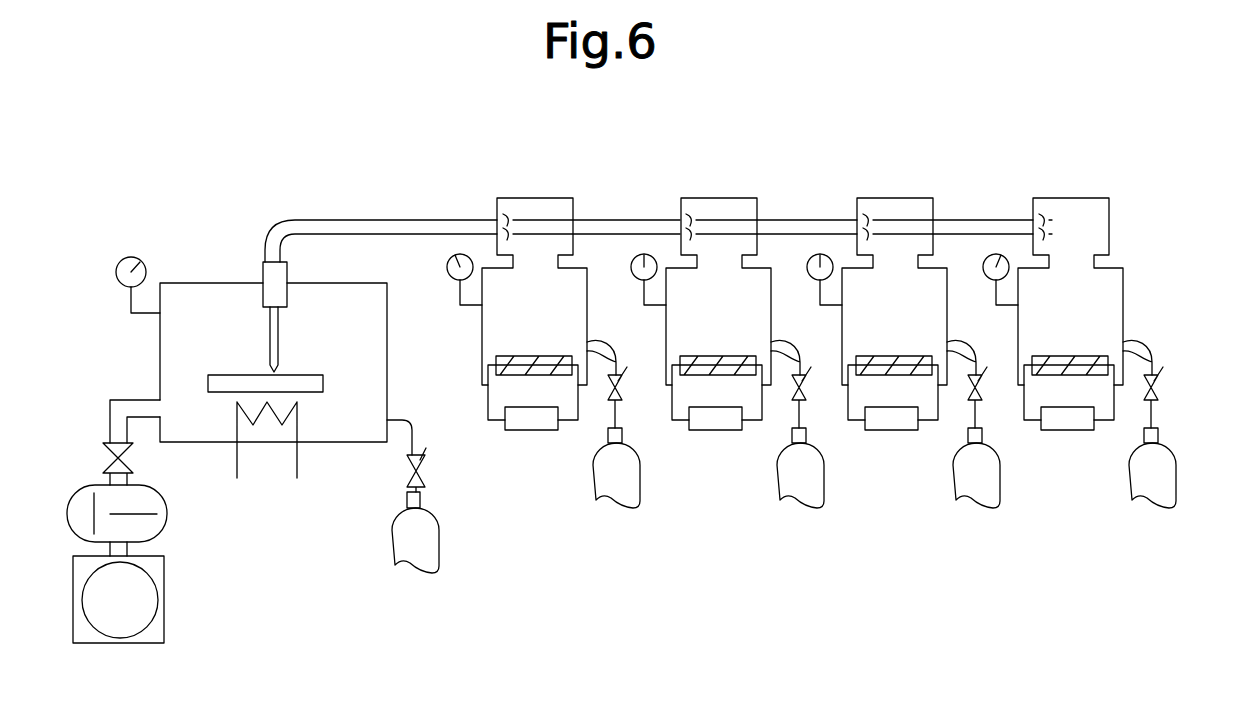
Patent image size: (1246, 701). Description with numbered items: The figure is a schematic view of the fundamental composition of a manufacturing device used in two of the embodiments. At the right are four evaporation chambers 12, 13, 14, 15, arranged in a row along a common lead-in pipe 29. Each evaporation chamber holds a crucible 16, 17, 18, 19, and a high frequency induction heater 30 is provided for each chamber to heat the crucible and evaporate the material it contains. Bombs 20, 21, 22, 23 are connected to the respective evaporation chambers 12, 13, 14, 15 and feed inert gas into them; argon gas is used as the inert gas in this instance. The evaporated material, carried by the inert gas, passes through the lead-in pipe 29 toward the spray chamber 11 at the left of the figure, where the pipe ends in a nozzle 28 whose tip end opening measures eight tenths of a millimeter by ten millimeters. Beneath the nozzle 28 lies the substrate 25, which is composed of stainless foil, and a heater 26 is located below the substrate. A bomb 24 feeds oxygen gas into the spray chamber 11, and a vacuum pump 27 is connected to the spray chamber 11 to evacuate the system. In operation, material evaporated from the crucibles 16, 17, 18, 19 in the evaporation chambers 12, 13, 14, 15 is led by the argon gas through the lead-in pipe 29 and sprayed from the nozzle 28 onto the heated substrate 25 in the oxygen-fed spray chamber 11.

The spray chamber 11 is at (197, 290).
The evaporation chamber 12 is at (573, 303).
The evaporation chamber 13 is at (757, 303).
The evaporation chamber 14 is at (933, 303).
The evaporation chamber 15 is at (1108, 284).
The crucible 16 is at (616, 352).
The crucible 17 is at (794, 348).
The crucible 18 is at (964, 340).
The crucible 19 is at (1134, 328).
The bomb 20 is at (637, 459).
The bomb 21 is at (814, 462).
The bomb 22 is at (996, 464).
The bomb 23 is at (1169, 442).
The bomb 24 is at (437, 520).
The substrate 25 is at (325, 377).
The heater 26 is at (237, 422).
The vacuum pump 27 is at (165, 598).
The nozzle 28 is at (278, 365).
The lead-in pipe 29 is at (418, 215).
The high frequency induction heater 30 is at (502, 430).